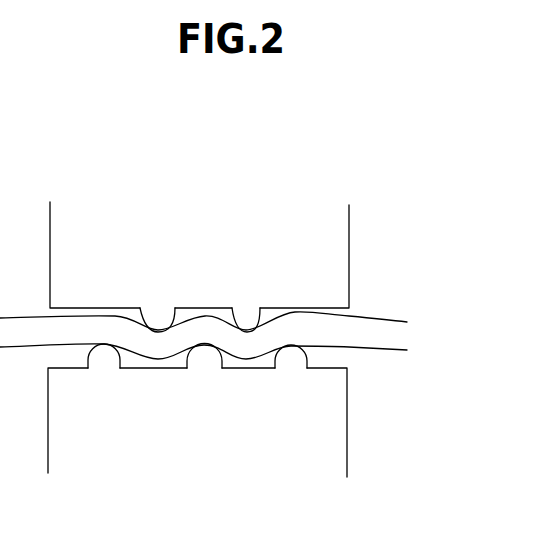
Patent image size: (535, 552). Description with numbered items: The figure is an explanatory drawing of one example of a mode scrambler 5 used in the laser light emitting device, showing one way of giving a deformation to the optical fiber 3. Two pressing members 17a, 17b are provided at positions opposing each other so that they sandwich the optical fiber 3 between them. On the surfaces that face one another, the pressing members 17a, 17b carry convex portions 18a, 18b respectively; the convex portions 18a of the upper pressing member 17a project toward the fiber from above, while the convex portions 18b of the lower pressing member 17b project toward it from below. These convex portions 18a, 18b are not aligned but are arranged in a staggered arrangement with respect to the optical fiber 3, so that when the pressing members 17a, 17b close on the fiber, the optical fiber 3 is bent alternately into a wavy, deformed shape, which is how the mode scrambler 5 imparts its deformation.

The mode scrambler 5 is at (348, 163).
The pressing member 17a is at (349, 228).
The pressing member 17b is at (347, 444).
The convex portions 18a is at (243, 318).
The convex portions 18b is at (203, 362).
The optical fiber 3 is at (392, 317).